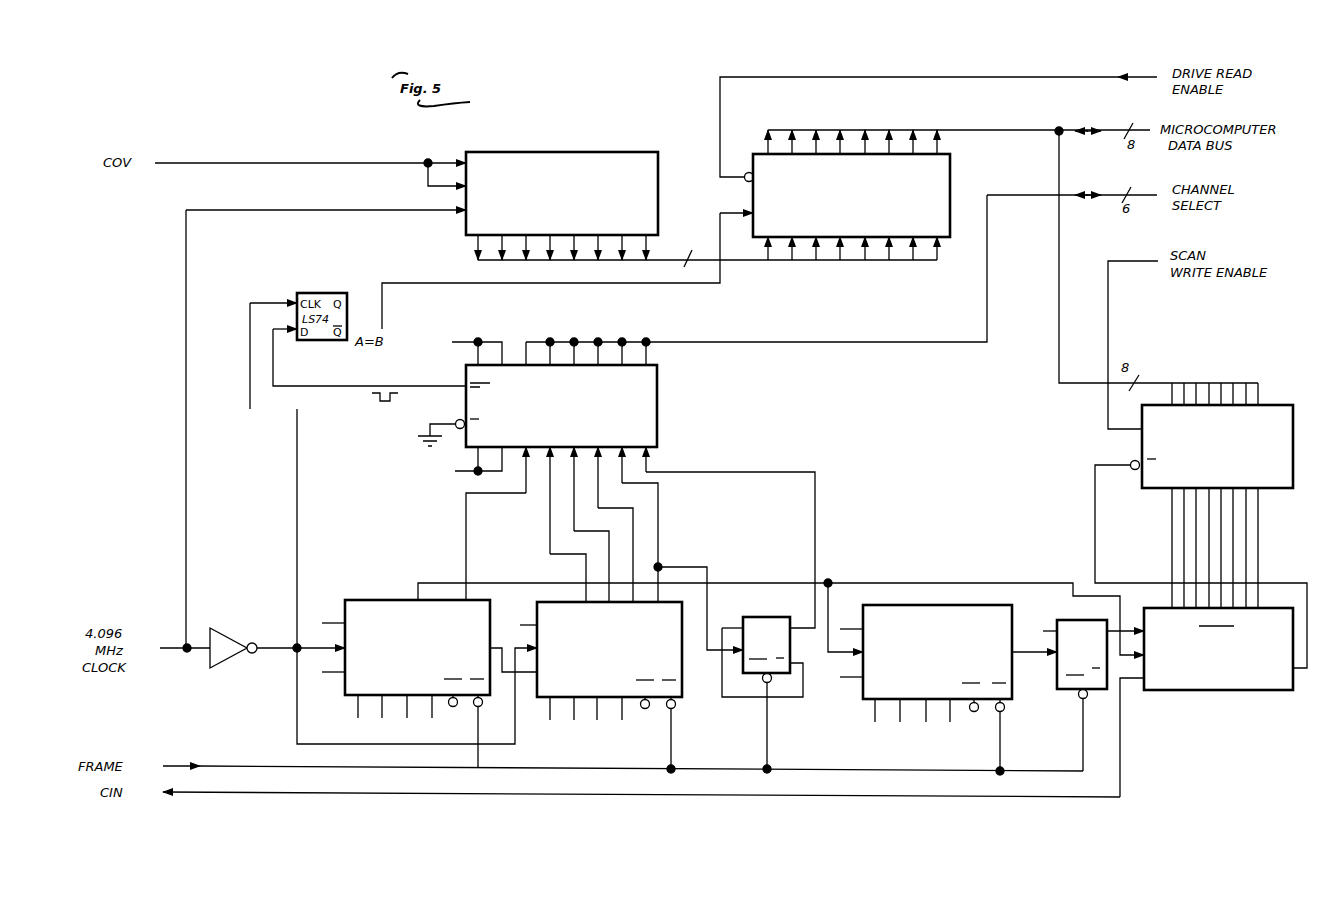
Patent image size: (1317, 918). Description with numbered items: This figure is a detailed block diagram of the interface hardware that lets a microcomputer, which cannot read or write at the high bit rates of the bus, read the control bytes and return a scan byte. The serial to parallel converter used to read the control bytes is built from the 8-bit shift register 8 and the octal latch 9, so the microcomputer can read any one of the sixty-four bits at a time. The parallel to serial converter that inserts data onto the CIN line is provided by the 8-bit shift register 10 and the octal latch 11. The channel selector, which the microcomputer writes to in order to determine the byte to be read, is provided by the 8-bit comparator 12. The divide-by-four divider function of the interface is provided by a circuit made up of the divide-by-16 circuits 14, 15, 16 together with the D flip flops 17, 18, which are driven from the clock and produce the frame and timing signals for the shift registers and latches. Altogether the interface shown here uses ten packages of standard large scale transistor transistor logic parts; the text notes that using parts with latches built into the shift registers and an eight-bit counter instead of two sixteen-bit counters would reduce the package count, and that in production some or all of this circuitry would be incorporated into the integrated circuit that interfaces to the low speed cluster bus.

The 8-bit shift register 8 is at (572, 152).
The octal latch 9 is at (950, 167).
The 8-bit shift register 10 is at (1236, 691).
The octal latch 11 is at (1275, 405).
The 8-bit comparator 12 is at (657, 388).
The divide-by-16 circuit 14 is at (393, 599).
The divide-by-16 circuit 15 is at (682, 688).
The divide-by-16 circuit 16 is at (980, 605).
The D flip flop 17 is at (765, 617).
The D flip flop 18 is at (1080, 619).